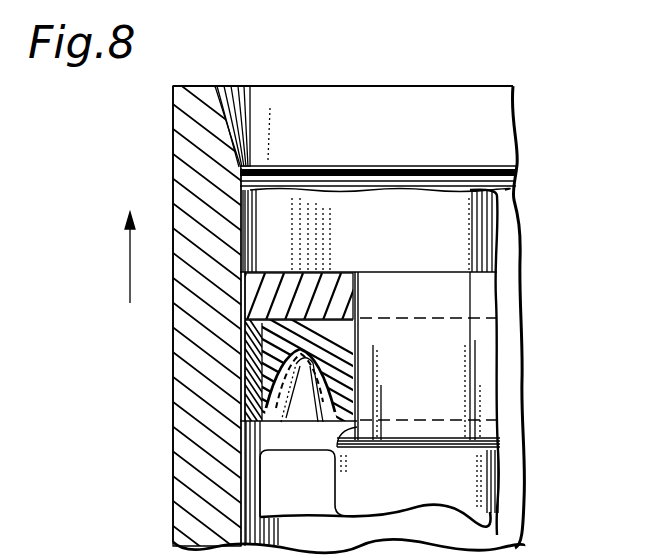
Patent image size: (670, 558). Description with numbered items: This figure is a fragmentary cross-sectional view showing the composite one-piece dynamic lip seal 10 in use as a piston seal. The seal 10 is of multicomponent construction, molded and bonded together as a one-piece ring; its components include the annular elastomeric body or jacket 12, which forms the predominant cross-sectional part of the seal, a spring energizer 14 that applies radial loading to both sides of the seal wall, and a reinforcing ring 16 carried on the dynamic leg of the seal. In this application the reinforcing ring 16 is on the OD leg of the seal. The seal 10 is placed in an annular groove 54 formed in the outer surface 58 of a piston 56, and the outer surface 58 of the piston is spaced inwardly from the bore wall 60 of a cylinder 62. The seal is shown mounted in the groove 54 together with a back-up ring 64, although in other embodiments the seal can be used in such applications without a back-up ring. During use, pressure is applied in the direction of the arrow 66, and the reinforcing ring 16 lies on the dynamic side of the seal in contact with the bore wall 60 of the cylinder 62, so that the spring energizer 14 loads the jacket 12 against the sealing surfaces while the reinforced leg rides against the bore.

The composite one-piece dynamic lip seal 10 is at (348, 353).
The annular elastomeric body or jacket 12 is at (345, 390).
The spring energizer 14 is at (243, 398).
The reinforcing ring 16 is at (255, 340).
The annular groove 54 is at (330, 497).
The piston 56 is at (483, 226).
The outer surface of the piston 58 is at (258, 487).
The bore wall 60 is at (247, 226).
The cylinder 62 is at (190, 150).
The back-up ring 64 is at (295, 290).
The arrow 66 is at (131, 263).